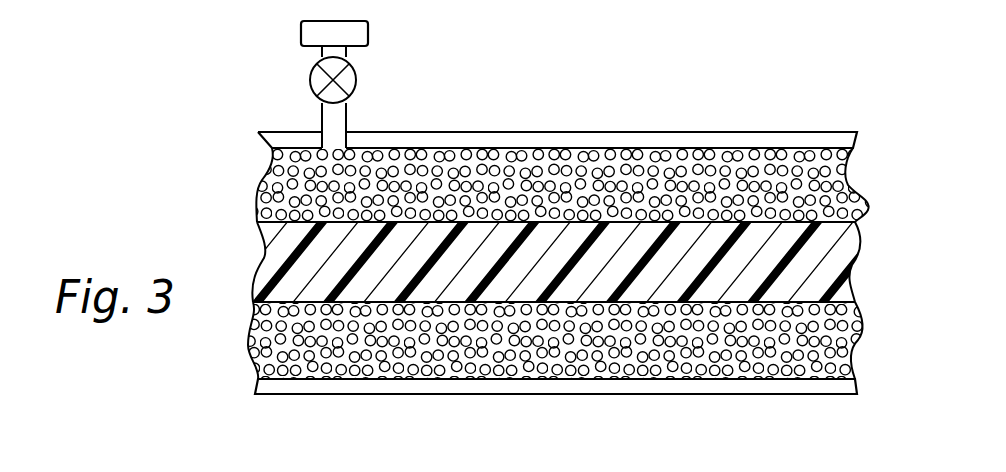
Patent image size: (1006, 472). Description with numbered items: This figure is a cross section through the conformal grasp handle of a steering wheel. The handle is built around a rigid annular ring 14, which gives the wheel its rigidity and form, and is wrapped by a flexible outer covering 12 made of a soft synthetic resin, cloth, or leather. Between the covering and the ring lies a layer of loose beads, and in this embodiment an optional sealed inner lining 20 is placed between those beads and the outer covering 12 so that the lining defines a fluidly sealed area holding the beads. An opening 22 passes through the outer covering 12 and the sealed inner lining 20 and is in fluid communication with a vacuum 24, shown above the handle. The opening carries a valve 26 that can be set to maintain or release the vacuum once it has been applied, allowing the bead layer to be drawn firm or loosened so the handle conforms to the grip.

The flexible outer covering 12 is at (714, 133).
The rigid annular ring 14 is at (798, 265).
The sealed inner lining 20 is at (551, 147).
The inlet passage 22 is at (333, 150).
The vacuum 24 is at (301, 33).
The valve 26 is at (355, 84).